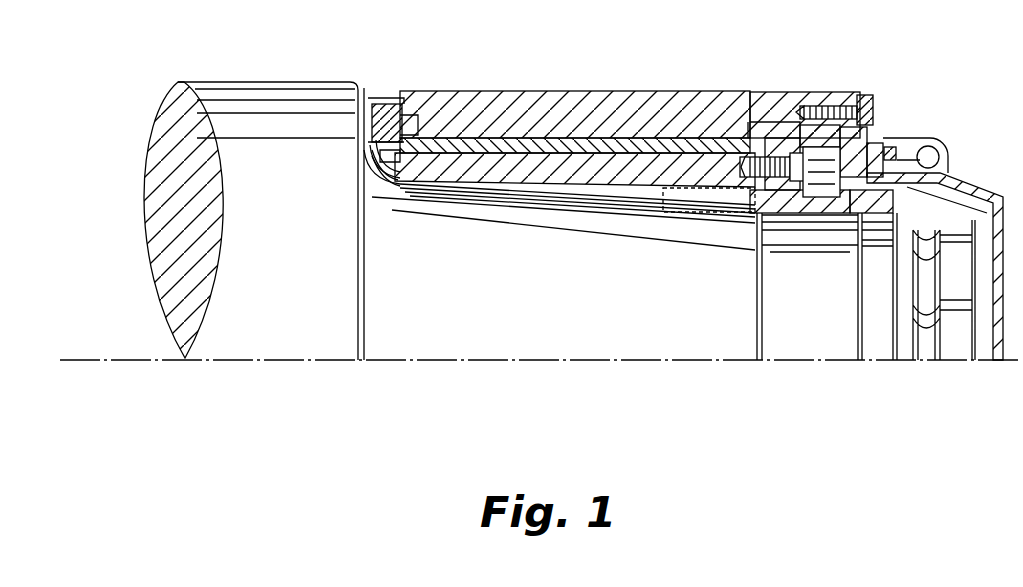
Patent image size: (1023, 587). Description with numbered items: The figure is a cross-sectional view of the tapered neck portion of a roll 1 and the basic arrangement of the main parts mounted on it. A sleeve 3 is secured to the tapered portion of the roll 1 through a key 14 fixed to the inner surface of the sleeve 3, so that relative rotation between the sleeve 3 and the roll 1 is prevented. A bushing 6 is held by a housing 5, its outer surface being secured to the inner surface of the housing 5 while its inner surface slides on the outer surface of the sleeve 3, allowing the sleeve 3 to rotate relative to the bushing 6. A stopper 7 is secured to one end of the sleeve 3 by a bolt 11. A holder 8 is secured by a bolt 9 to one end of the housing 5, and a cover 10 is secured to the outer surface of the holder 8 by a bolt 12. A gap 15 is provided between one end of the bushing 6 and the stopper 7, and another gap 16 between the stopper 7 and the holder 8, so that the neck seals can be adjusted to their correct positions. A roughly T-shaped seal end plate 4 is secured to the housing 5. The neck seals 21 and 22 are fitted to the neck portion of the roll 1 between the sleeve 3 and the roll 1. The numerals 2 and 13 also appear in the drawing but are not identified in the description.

The roll 1 is at (268, 343).
The lens mount 2 is at (575, 89).
The sleeve 3 is at (498, 175).
The seal end plate 4 is at (395, 104).
The housing 5 is at (470, 91).
The bushing 6 is at (543, 145).
The stopper 7 is at (778, 112).
The holder 8 is at (838, 94).
The bolt 9 is at (860, 94).
The cover 10 is at (935, 120).
The bolt 11 is at (753, 217).
The bolt 12 is at (890, 147).
The thread 13 is at (643, 190).
The key 14 is at (695, 192).
The gap 15 is at (760, 127).
The gap 16 is at (795, 122).
The neck seal 21 is at (399, 174).
The neck seal 22 is at (372, 155).